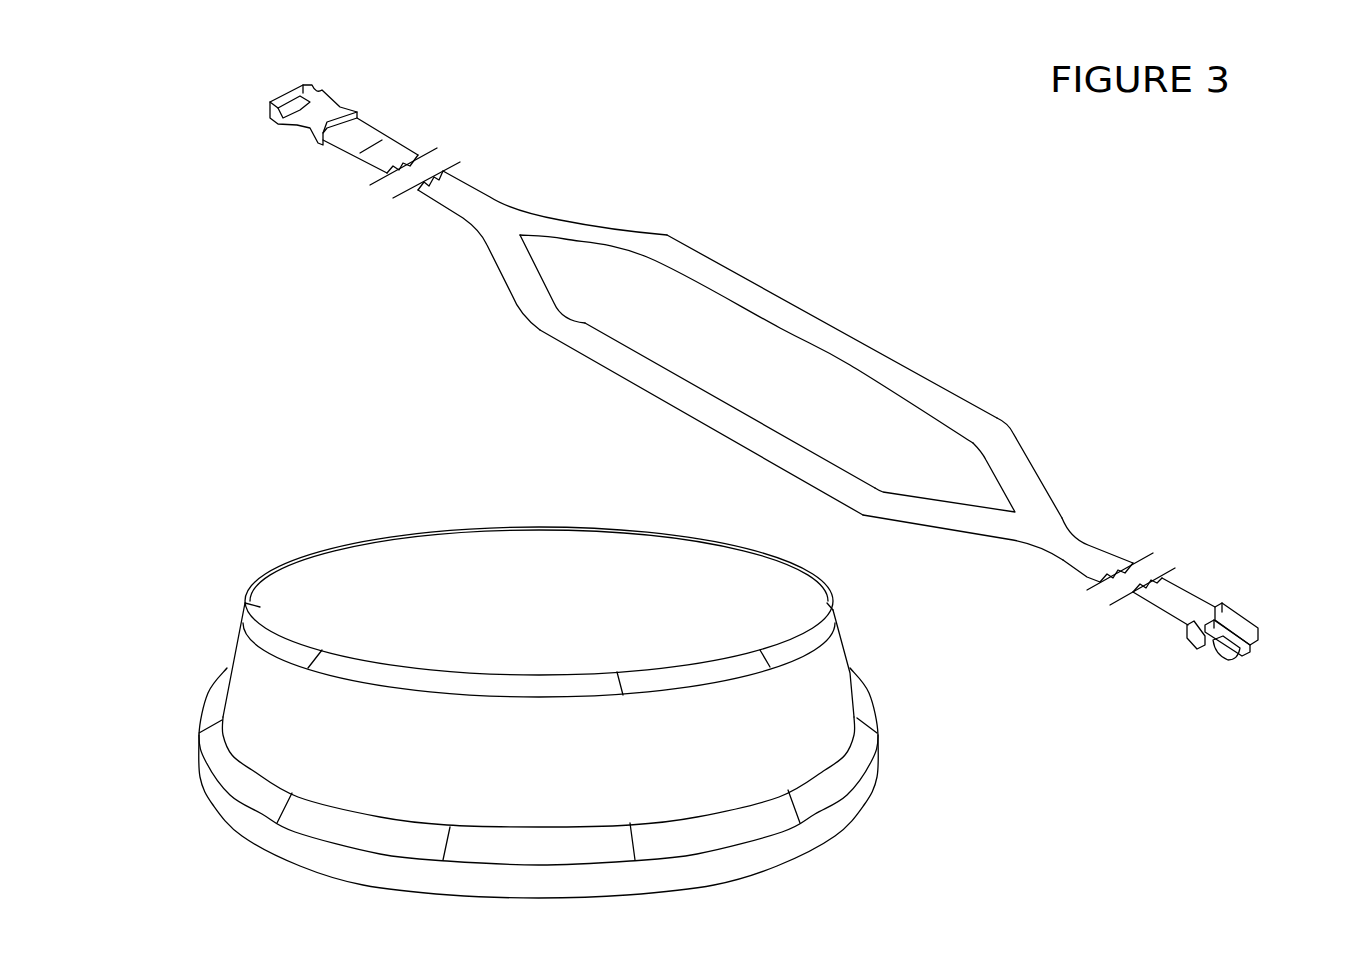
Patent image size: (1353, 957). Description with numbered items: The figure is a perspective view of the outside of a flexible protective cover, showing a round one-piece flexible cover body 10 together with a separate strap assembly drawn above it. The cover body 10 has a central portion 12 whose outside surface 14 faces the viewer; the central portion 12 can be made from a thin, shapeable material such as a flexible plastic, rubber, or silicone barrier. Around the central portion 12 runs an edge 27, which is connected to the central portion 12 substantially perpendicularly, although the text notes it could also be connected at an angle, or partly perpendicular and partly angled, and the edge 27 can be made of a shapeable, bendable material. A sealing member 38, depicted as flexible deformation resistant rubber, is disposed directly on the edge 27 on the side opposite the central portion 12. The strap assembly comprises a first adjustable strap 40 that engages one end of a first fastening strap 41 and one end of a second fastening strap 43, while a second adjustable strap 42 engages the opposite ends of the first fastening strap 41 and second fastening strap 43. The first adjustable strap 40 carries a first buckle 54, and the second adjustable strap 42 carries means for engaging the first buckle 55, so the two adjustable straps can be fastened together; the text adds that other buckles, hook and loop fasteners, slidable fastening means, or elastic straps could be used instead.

The round one-piece flexible cover body 10 is at (405, 444).
The central portion 12 is at (258, 588).
The outside surface 14 is at (375, 560).
The edge 27 is at (253, 692).
The sealing member 38 is at (880, 750).
The first adjustable strap 40 is at (462, 199).
The first fastening strap 41 is at (708, 412).
The second adjustable strap 42 is at (1083, 552).
The second fastening strap 43 is at (818, 337).
The first buckle 54 is at (313, 105).
The means for engaging the first buckle 55 is at (1253, 628).